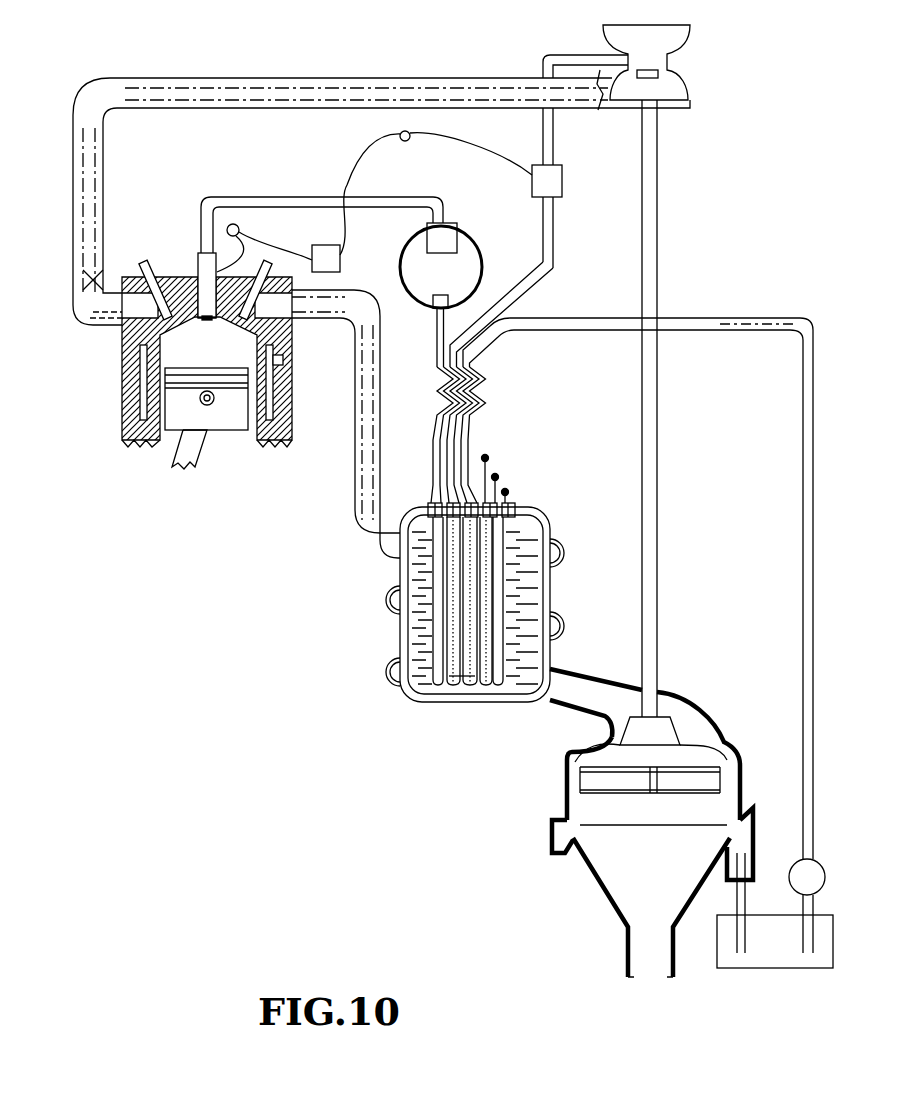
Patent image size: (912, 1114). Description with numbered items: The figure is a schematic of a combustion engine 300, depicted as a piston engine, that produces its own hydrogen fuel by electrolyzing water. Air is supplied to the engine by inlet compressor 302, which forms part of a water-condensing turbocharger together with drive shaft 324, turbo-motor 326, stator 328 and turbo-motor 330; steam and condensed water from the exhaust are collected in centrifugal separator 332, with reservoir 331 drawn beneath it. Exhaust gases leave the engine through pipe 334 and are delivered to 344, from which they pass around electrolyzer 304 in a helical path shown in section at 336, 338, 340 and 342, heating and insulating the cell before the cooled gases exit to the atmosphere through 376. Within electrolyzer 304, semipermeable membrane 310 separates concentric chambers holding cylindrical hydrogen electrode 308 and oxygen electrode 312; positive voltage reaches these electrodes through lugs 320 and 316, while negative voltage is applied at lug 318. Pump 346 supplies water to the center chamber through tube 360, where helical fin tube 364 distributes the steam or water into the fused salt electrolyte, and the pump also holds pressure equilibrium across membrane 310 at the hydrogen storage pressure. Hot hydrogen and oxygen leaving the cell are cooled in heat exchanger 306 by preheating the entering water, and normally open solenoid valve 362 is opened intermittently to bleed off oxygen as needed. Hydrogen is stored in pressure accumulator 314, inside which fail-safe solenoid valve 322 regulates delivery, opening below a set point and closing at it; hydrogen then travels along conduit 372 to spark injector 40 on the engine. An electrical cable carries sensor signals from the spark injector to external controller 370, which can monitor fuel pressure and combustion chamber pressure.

The spark injector 40 is at (197, 274).
The combustion engine 300 is at (100, 394).
The inlet compressor 302 is at (670, 82).
The electrolyzer 304 is at (430, 661).
The heat exchanger 306 is at (490, 362).
The hydrogen electrode 308 is at (430, 680).
The semipermeable membrane 310 is at (441, 683).
The oxygen electrode 312 is at (451, 685).
The pressure accumulator 314 is at (482, 255).
The lug 316 is at (485, 458).
The lug 318 is at (495, 477).
The lug 320 is at (505, 492).
The solenoid valve 322 is at (452, 222).
The drive shaft 324 is at (660, 412).
The turbo-motor 326 is at (672, 736).
The stator 328 is at (718, 773).
The turbo-motor 330 is at (575, 815).
The reservoir tank 331 is at (768, 968).
The centrifugal separator 332 is at (547, 838).
The exhaust pipe 334 is at (352, 482).
The helical exhaust path section 336 is at (560, 553).
The helical exhaust path section 338 is at (388, 598).
The helical exhaust path section 340 is at (563, 623).
The helical exhaust path section 342 is at (388, 674).
The exhaust gas delivery 344 is at (612, 655).
The pump 346 is at (805, 858).
The tube 360 is at (718, 316).
The solenoid valve 362 is at (560, 196).
The helical fin tube 364 is at (466, 685).
The controller 370 is at (342, 262).
The conduit 372 is at (367, 196).
The exhaust outlet 376 is at (628, 960).